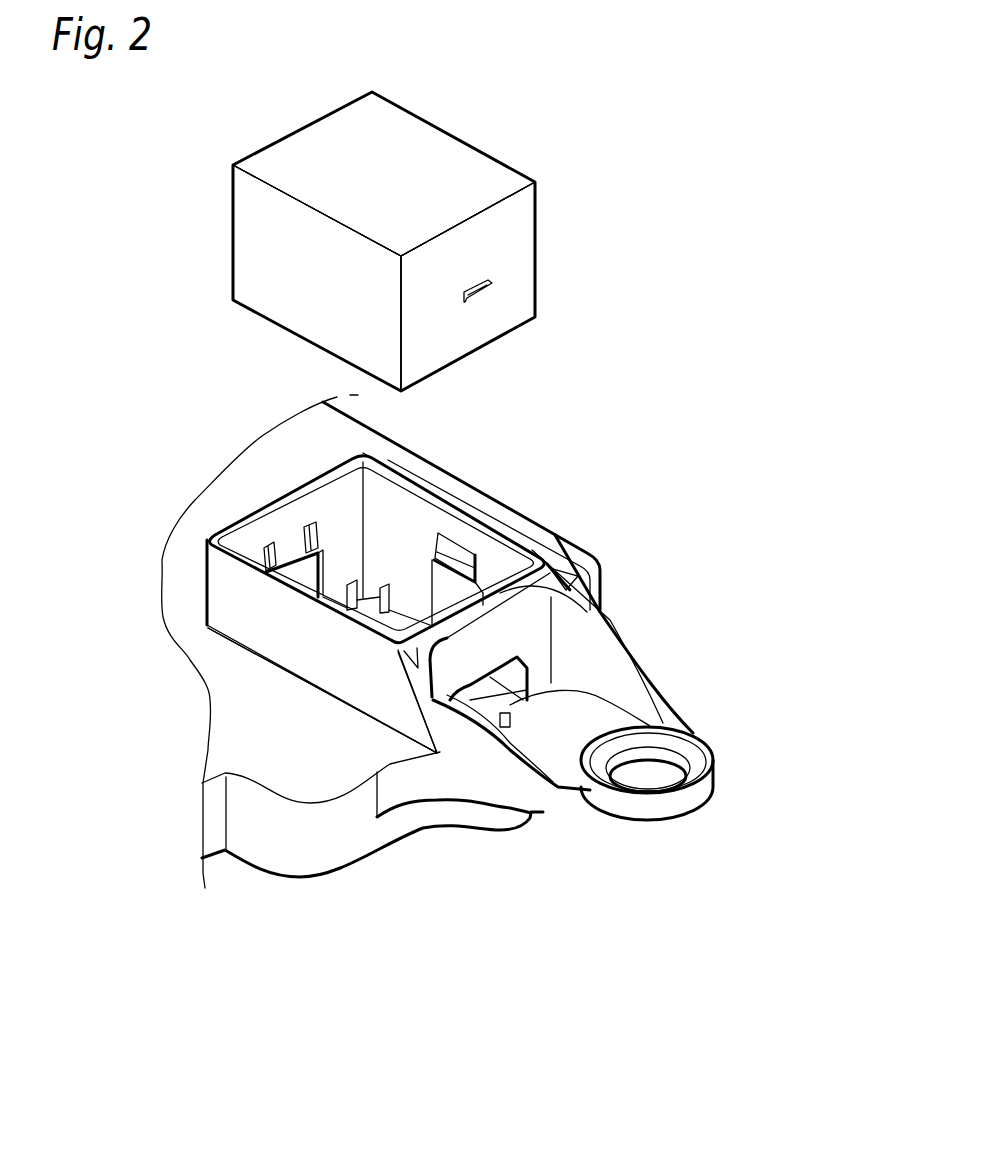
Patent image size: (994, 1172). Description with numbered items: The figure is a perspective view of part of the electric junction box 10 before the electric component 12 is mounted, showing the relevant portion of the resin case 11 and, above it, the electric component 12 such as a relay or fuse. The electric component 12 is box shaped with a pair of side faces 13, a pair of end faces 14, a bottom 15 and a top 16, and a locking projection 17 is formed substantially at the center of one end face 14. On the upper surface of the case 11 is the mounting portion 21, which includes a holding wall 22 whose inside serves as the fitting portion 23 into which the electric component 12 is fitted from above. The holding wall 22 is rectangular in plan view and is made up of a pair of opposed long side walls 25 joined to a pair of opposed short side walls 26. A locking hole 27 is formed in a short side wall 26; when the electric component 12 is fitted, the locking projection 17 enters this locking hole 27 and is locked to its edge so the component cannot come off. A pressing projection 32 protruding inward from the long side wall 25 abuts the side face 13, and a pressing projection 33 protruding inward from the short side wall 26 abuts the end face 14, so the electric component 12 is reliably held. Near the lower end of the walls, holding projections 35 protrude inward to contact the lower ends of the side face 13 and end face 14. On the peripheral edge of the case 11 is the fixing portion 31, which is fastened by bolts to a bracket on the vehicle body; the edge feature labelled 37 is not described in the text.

The electric junction box 10 is at (429, 675).
The case 11 is at (278, 890).
The electric component 12 is at (370, 234).
The side faces 13 is at (246, 233).
The end faces 14 is at (518, 258).
The bottom 15 is at (457, 363).
The top 16 is at (477, 172).
The locking projection 17 is at (481, 296).
The mounting portion 21 is at (358, 558).
The holding wall 22 is at (199, 628).
The fitting portion 23 is at (284, 521).
The long side walls 25 is at (472, 515).
The short side walls 26 is at (284, 516).
The locking hole 27 is at (520, 678).
The fixing portion 31 is at (710, 718).
The pressing projection 32 is at (463, 557).
The pressing projection 33 is at (318, 532).
The holding projections 35 is at (358, 592).
The arm portion 37 is at (621, 619).